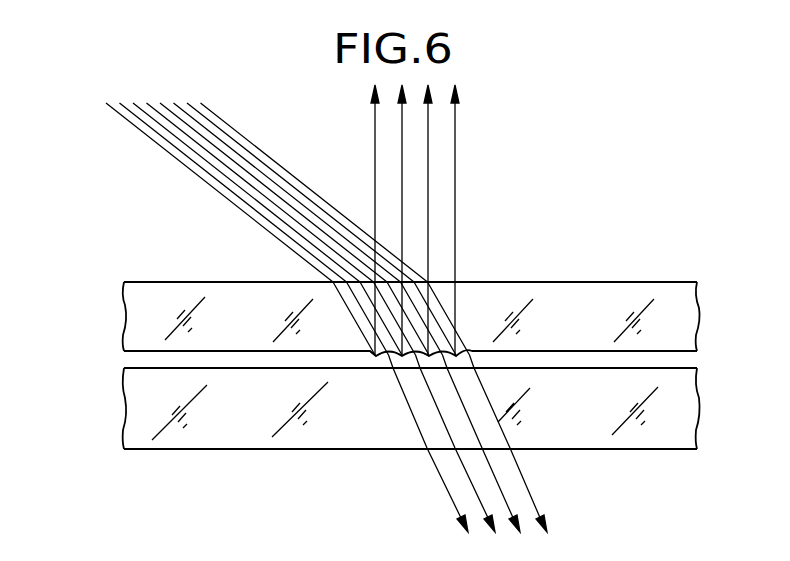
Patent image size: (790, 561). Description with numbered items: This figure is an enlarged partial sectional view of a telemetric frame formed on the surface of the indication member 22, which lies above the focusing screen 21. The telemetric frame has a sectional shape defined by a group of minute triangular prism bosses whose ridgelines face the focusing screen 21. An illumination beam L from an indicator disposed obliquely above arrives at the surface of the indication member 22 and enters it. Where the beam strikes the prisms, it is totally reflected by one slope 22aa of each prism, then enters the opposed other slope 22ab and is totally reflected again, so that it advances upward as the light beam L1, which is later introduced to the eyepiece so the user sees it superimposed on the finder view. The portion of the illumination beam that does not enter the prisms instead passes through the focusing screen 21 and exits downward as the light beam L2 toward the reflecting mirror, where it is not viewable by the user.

The focusing screen 21 is at (147, 396).
The indication member 22 is at (142, 318).
The one slope of prism 22aa is at (371, 358).
The other slope of prism 22ab is at (388, 357).
The light beam L is at (186, 166).
The upward light beam L1 is at (455, 165).
The exiting light beam L2 is at (527, 490).